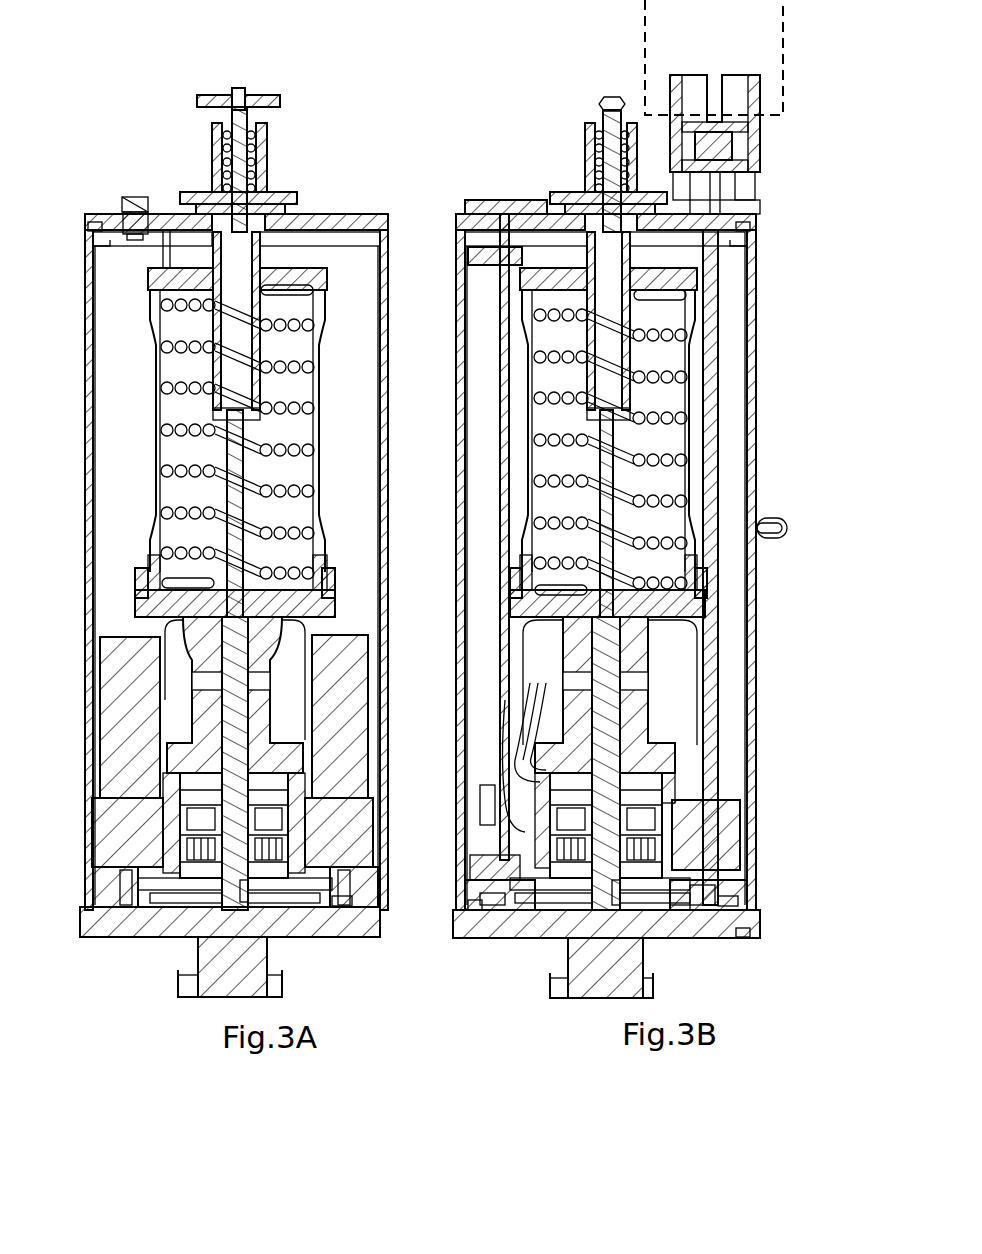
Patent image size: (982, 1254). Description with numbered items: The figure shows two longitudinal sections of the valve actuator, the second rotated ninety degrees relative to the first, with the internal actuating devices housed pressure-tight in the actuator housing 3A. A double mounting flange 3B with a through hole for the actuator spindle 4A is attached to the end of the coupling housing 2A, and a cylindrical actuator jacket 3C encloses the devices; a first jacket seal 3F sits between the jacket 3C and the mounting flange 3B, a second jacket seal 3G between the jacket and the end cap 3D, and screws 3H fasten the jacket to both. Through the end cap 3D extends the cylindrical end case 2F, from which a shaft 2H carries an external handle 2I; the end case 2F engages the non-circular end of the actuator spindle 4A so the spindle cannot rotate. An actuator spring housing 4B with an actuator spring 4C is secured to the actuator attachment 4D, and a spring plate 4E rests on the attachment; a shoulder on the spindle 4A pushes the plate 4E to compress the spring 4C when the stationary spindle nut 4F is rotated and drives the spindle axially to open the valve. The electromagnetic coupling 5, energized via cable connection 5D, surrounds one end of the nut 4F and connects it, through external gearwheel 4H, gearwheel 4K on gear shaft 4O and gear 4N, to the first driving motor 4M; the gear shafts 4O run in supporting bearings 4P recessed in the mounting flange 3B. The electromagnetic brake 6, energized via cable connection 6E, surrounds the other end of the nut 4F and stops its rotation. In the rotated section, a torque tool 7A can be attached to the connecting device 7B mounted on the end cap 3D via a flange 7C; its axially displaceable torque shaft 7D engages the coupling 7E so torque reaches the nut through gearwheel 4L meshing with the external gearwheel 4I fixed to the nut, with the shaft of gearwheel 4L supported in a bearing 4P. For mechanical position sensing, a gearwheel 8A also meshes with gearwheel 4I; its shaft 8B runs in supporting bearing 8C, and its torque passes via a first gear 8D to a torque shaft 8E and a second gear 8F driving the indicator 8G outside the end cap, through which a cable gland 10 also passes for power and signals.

In FIG. 3A, the coupling housing 2A is at (308, 136).
In FIG. 3B, the coupling housing 2A is at (590, 1005).
In FIG. 3A, the end case 2F is at (238, 323).
In FIG. 3B, the end case 2F is at (608, 326).
In FIG. 3A, the shaft 2H is at (238, 150).
In FIG. 3A, the external handle 2I is at (212, 90).
In FIG. 3A, the actuator housing 3A is at (472, 98).
In FIG. 3A, the mounting flange 3B is at (120, 937).
In FIG. 3B, the mounting flange 3B is at (578, 955).
In FIG. 3A, the actuator jacket 3C is at (84, 660).
In FIG. 3B, the actuator jacket 3C is at (757, 660).
In FIG. 3A, the end cap 3D is at (328, 222).
In FIG. 3B, the end cap 3D is at (606, 230).
In FIG. 3A, the first jacket seal 3F is at (332, 910).
In FIG. 3B, the first jacket seal 3F is at (752, 928).
In FIG. 3A, the second jacket seal 3G is at (98, 244).
In FIG. 3B, the second jacket seal 3G is at (744, 245).
In FIG. 3A, the screws 3H is at (85, 227).
In FIG. 3B, the screws 3H is at (762, 223).
In FIG. 3A, the actuator spindle 4A is at (233, 610).
In FIG. 3B, the actuator spindle 4A is at (605, 705).
In FIG. 3A, the actuator spring housing 4B is at (148, 512).
In FIG. 3B, the actuator spring housing 4B is at (608, 429).
In FIG. 3A, the actuator spring 4C is at (175, 350).
In FIG. 3B, the actuator spring 4C is at (610, 442).
In FIG. 3A, the actuator attachment 4D is at (336, 598).
In FIG. 3A, the spring plate 4E is at (246, 550).
In FIG. 3B, the spring plate 4E is at (606, 513).
In FIG. 3A, the spindle nut 4F is at (258, 895).
In FIG. 3B, the spindle nut 4F is at (629, 905).
In FIG. 3A, the external gearwheel 4H is at (175, 900).
In FIG. 3A, the external gearwheel 4I is at (200, 905).
In FIG. 3B, the external gearwheel 4I is at (550, 905).
In FIG. 3A, the gearwheel 4K is at (140, 875).
In FIG. 3B, the gearwheel 4K is at (606, 825).
In FIG. 3B, the gearwheel 4L is at (728, 892).
In FIG. 3A, the first driving motor 4M is at (130, 695).
In FIG. 3A, the gear 4N is at (127, 826).
In FIG. 3A, the gear shaft 4O is at (130, 900).
In FIG. 3A, the supporting bearing 4P is at (112, 915).
In FIG. 3B, the supporting bearing 4P is at (683, 908).
In FIG. 3A, the electromagnetic coupling 5 is at (280, 928).
In FIG. 3B, the cable connection 5D is at (487, 797).
In FIG. 3A, the electromagnetic brake 6 is at (338, 692).
In FIG. 3B, the cable connection 6E is at (525, 706).
In FIG. 3B, the torque tool 7A is at (643, 50).
In FIG. 3B, the connecting device 7B is at (762, 125).
In FIG. 3B, the flange 7C is at (748, 203).
In FIG. 3B, the torque shaft 7D is at (720, 425).
In FIG. 3B, the coupling 7E is at (702, 832).
In FIG. 3B, the gearwheel 8A is at (466, 934).
In FIG. 3B, the shaft 8B is at (495, 905).
In FIG. 3B, the supporting bearing 8C is at (482, 912).
In FIG. 3B, the first gear 8D is at (468, 868).
In FIG. 3B, the torque shaft 8E is at (498, 341).
In FIG. 3B, the second gear 8F is at (504, 262).
In FIG. 3B, the indicator 8G is at (507, 198).
In FIG. 3A, the cable gland 10 is at (128, 192).